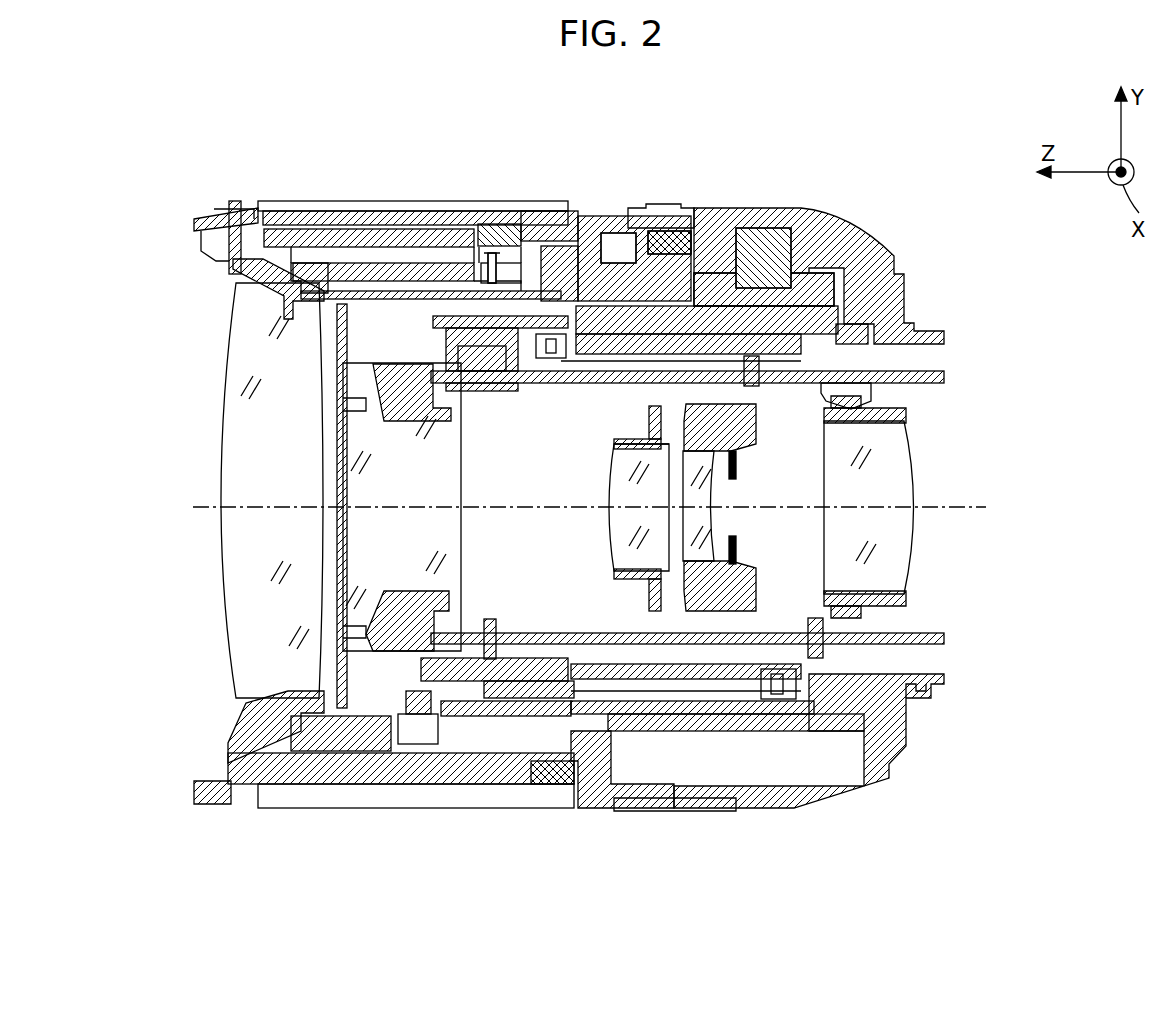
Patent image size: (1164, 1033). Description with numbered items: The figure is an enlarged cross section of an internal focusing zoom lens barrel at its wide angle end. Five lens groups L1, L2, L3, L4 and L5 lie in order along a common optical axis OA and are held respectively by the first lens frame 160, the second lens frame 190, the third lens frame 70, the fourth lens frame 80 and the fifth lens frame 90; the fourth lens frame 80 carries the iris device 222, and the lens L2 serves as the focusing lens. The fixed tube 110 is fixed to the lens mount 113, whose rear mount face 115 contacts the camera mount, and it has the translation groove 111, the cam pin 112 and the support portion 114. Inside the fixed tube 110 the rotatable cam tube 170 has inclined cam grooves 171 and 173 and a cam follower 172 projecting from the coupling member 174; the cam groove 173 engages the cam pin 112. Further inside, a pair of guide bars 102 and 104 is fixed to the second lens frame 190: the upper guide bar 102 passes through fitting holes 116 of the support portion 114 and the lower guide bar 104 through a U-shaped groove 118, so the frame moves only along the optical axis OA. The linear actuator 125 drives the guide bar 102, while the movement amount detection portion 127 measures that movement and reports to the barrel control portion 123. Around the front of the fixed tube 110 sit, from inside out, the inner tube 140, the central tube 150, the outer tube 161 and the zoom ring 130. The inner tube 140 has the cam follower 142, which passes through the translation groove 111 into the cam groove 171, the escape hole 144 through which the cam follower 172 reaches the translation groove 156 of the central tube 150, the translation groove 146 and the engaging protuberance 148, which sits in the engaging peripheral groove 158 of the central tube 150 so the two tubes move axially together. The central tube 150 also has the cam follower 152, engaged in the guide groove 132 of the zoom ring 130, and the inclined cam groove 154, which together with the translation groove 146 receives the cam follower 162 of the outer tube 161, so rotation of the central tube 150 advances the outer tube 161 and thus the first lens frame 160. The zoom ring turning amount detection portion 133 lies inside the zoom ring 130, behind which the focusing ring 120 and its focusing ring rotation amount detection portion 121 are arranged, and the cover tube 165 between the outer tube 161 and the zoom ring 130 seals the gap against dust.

The third lens frame 70 is at (605, 450).
The fourth lens frame 80 is at (720, 507).
The fifth lens frame 90 is at (898, 423).
The guide bar 102 is at (950, 378).
The guide bar 104 is at (950, 640).
The fixed tube 110 is at (830, 225).
The translation groove 111 is at (673, 690).
The cam pin 112 is at (600, 345).
The lens mount 113 is at (930, 690).
The support portion 114 is at (450, 345).
The mount face 115 is at (925, 718).
The fitting hole 116 is at (460, 385).
The U-shaped groove 118 is at (495, 620).
The focusing ring 120 is at (655, 205).
The focusing ring rotation amount detection portion 121 is at (705, 230).
The barrel control portion 123 is at (810, 265).
The linear actuator 125 is at (525, 387).
The movement amount detection portion 127 is at (875, 398).
The zoom ring 130 is at (555, 225).
The guide groove 132 is at (487, 222).
The zoom ring turning amount detection portion 133 is at (580, 810).
The inner tube 140 is at (318, 203).
The cam follower 142 is at (713, 677).
The escape hole 144 is at (560, 748).
The translation groove 146 is at (367, 215).
The engaging protuberance 148 is at (290, 318).
The central tube 150 is at (420, 215).
The cam follower 152 is at (575, 240).
The cam groove 154 is at (443, 215).
The translation groove 156 is at (525, 745).
The engaging peripheral groove 158 is at (275, 283).
The first lens frame 160 is at (245, 707).
The outer tube 161 is at (280, 203).
The cam follower 162 is at (543, 215).
The cover tube 165 is at (372, 208).
The cam tube 170 is at (598, 650).
The cam groove 171 is at (740, 673).
The cam follower 172 is at (460, 740).
The cam groove 173 is at (545, 365).
The coupling member 174 is at (393, 698).
The second lens frame 190 is at (452, 588).
The iris device 222 is at (740, 462).
The lens L1 is at (215, 510).
The lens L2 is at (455, 535).
The lens L3 is at (618, 540).
The lens L4 is at (712, 540).
The lens L5 is at (905, 540).
The optical axis OA is at (947, 503).